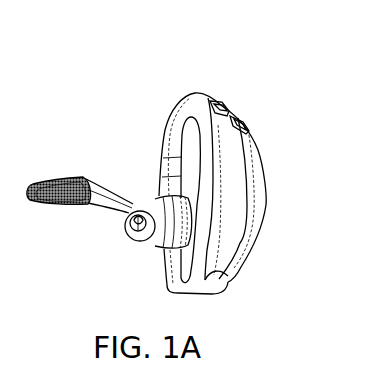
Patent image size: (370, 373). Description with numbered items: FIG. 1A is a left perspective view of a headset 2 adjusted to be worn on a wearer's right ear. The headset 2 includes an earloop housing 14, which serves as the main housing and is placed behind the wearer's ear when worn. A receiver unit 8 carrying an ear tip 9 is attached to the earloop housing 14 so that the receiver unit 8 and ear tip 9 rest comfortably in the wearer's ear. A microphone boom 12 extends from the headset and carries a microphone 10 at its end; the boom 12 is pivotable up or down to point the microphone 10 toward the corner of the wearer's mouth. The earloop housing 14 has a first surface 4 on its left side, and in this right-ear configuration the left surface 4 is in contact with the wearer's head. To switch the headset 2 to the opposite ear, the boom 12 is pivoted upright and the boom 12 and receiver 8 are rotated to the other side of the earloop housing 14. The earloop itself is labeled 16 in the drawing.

The headset 2 is at (173, 61).
The first surface 4 is at (222, 210).
The receiver unit 8 is at (127, 220).
The ear tip 9 is at (142, 250).
The microphone 10 is at (41, 190).
The microphone boom 12 is at (107, 189).
The earloop housing 14 is at (270, 141).
The ear hook 16 is at (170, 123).